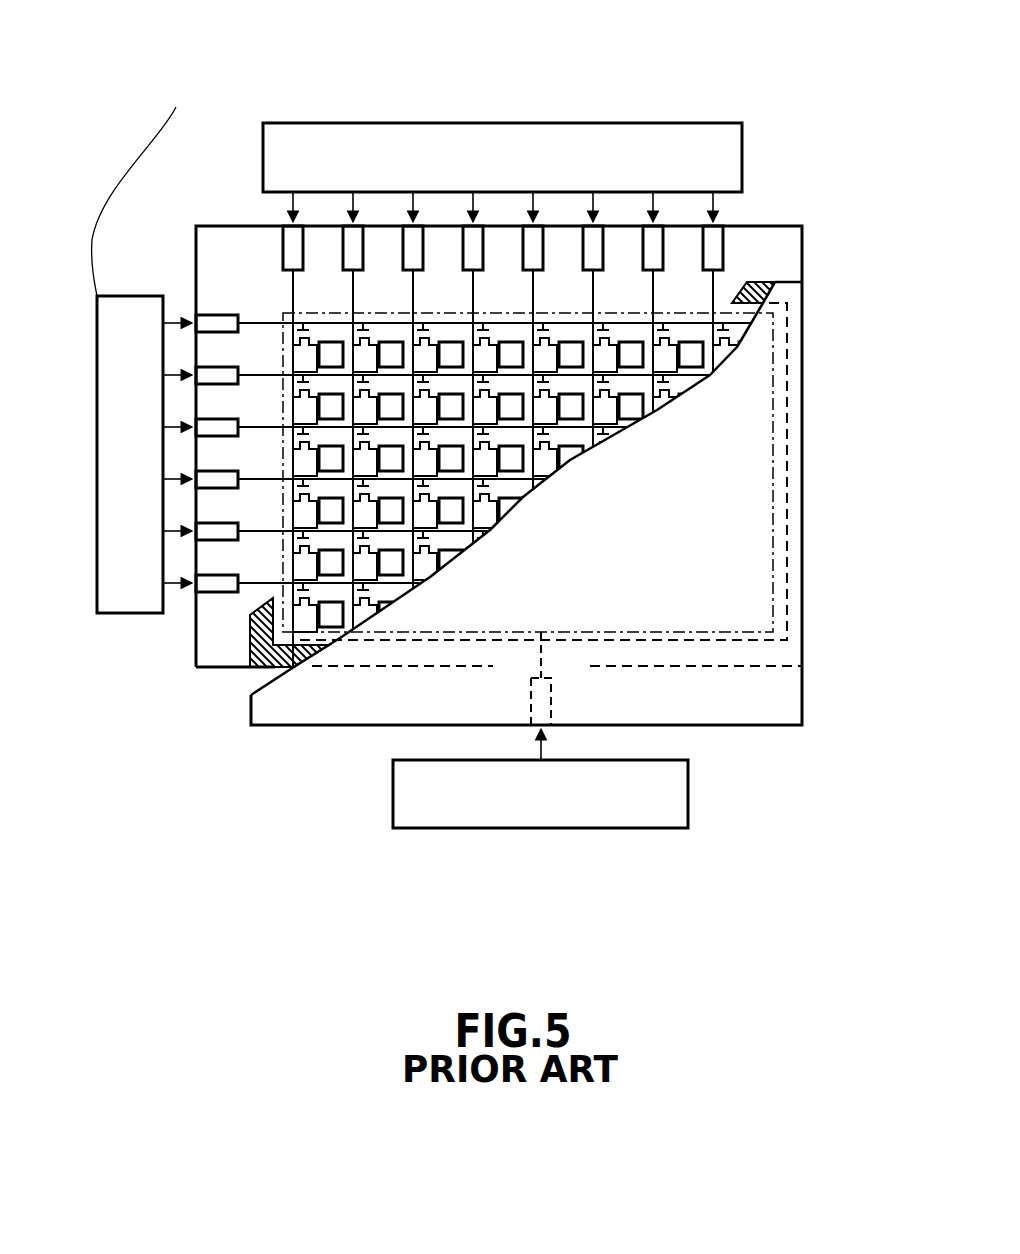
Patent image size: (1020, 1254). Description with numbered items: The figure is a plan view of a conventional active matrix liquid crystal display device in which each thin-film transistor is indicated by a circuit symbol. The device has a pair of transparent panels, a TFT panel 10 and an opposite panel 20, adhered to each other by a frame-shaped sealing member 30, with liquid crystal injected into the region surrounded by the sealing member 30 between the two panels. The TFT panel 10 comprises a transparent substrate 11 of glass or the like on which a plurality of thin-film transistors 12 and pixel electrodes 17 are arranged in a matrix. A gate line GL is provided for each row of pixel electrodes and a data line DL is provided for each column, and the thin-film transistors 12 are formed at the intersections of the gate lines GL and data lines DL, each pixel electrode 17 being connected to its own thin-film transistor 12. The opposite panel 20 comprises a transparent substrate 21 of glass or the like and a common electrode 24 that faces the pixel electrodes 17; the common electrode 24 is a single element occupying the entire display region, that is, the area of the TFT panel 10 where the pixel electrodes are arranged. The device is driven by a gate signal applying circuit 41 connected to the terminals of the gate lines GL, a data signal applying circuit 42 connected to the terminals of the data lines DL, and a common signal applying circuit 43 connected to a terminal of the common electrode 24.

The TFT panel 10 is at (250, 220).
The transparent substrate 11 is at (207, 253).
The thin-film transistor 12 is at (484, 333).
The pixel electrode 17 is at (390, 356).
The opposite panel 20 is at (289, 730).
The transparent substrate 21 is at (767, 707).
The common electrode 24 is at (767, 479).
The sealing member 30 is at (770, 282).
The gate signal applying circuit 41 is at (128, 613).
The data signal applying circuit 42 is at (714, 123).
The common signal applying circuit 43 is at (651, 828).
The gate line GL is at (252, 321).
The data line DL is at (290, 297).